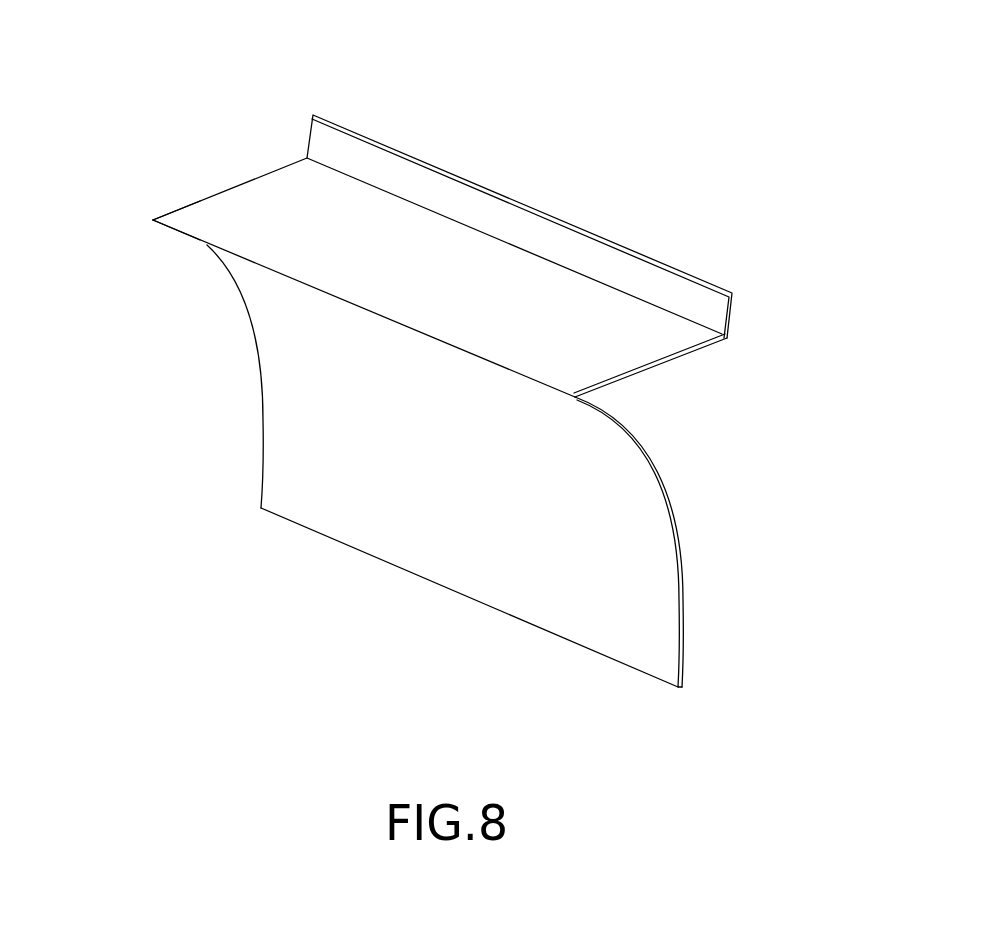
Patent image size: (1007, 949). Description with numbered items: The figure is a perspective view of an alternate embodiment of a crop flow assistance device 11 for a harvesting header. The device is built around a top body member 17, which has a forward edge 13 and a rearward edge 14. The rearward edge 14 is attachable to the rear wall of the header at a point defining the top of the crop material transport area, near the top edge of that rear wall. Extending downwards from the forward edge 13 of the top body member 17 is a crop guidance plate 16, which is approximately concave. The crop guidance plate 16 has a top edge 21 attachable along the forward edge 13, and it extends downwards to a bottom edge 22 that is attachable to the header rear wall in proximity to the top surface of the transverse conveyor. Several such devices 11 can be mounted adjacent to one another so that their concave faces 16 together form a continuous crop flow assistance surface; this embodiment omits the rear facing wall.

The crop flow assistance device 11 is at (393, 385).
The forward edge 13 is at (150, 212).
The rearward edge 14 is at (608, 238).
The crop guidance plate 16 is at (442, 502).
The top body member 17 is at (442, 268).
The top edge 21 is at (157, 225).
The bottom edge 22 is at (586, 648).